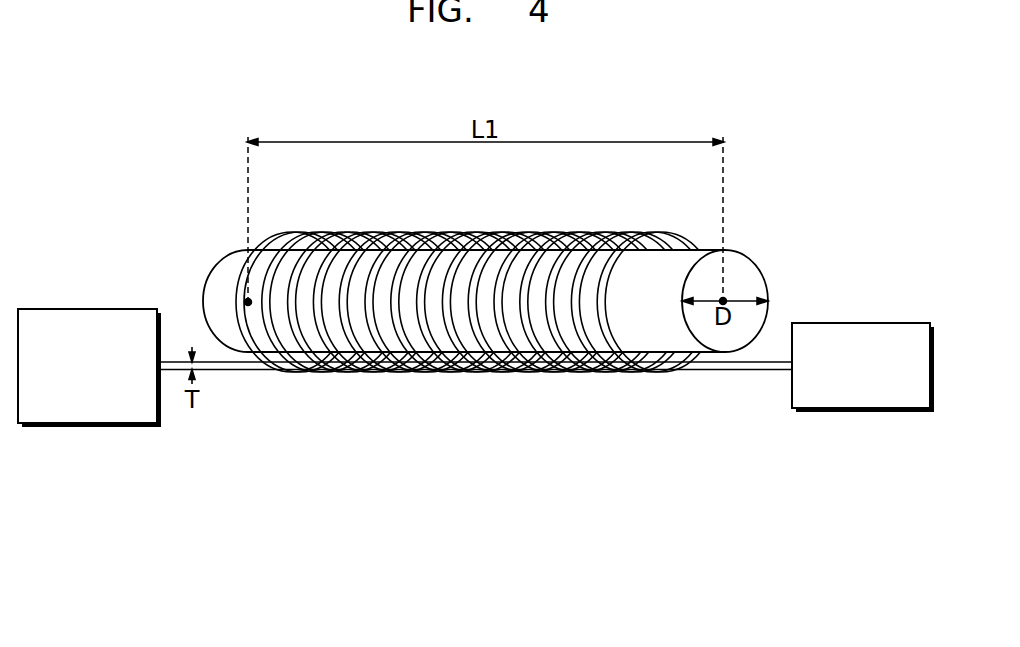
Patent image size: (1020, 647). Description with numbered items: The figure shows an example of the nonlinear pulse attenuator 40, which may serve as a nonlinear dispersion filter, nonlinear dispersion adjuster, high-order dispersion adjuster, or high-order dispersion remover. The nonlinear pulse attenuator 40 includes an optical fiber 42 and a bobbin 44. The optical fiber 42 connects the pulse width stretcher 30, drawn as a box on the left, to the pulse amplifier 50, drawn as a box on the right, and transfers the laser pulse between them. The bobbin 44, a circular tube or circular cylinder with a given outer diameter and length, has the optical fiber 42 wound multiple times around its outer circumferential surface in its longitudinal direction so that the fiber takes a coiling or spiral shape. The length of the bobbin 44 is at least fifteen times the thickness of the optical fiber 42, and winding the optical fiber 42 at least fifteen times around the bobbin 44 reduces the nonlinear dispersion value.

The pulse width stretcher 30 is at (125, 309).
The nonlinear pulse attenuator 40 is at (540, 291).
The optical fiber 42 is at (680, 237).
The bobbin 44 is at (745, 270).
The pulse amplifier 50 is at (896, 323).